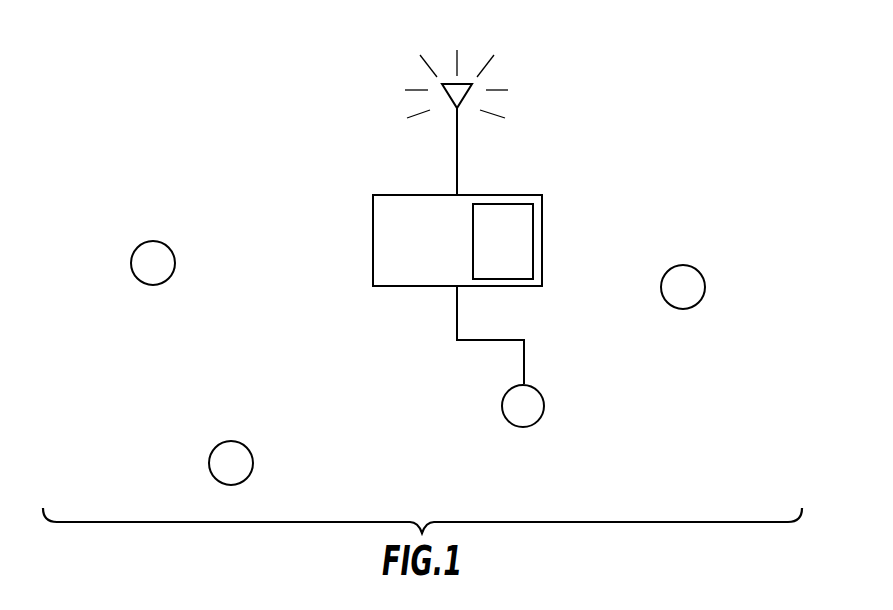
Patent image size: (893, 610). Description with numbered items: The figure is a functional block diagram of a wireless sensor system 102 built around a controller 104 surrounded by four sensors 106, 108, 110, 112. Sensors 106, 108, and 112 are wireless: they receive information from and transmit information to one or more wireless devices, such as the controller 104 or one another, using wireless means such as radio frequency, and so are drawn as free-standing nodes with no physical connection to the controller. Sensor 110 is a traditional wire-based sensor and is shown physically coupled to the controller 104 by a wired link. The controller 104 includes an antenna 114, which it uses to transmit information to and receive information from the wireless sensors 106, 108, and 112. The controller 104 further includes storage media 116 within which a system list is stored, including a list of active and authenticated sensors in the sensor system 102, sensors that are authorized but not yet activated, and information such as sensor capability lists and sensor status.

The sensor system 102 is at (132, 92).
The controller 104 is at (372, 232).
The sensor 106 is at (135, 244).
The sensor 108 is at (213, 445).
The sensor 110 is at (508, 424).
The sensor 112 is at (706, 290).
The antenna 114 is at (455, 168).
The storage media 116 is at (470, 219).